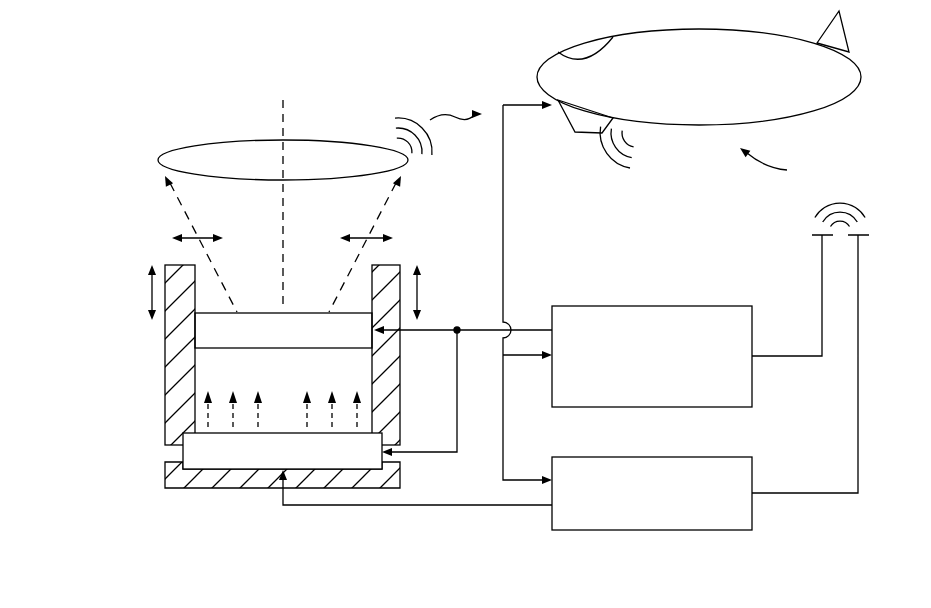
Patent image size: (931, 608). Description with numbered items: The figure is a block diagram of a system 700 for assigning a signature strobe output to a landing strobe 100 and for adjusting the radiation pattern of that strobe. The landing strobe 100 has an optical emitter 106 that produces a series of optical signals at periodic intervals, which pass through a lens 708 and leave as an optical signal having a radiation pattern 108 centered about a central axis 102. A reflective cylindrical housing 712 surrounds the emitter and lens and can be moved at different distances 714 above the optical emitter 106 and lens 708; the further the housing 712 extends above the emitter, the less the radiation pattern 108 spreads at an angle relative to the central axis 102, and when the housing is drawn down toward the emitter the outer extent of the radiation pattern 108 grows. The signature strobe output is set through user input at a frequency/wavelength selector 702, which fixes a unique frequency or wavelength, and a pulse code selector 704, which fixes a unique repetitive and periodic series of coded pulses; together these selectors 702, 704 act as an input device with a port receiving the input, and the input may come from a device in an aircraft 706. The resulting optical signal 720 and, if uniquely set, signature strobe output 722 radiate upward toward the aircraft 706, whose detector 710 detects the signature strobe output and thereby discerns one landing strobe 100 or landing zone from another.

The system 700 is at (166, 50).
The landing strobe 100 is at (122, 410).
The central axis 102 is at (281, 125).
The optical emitter 106 is at (212, 460).
The radiation pattern 108 is at (163, 157).
The lens 708 is at (200, 338).
The reflective cylindrical housing 712 is at (178, 317).
The distances 714 is at (148, 292).
The optical signal 720 is at (398, 100).
The signature strobe output 722 is at (456, 115).
The frequency/wavelength selector 702 is at (622, 305).
The pulse code selector 704 is at (622, 456).
The aircraft 706 is at (723, 90).
The detector 710 is at (578, 122).